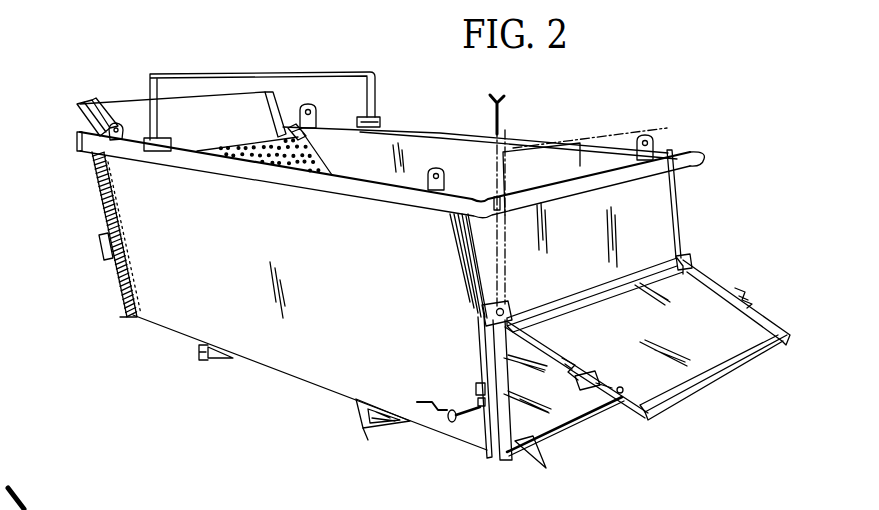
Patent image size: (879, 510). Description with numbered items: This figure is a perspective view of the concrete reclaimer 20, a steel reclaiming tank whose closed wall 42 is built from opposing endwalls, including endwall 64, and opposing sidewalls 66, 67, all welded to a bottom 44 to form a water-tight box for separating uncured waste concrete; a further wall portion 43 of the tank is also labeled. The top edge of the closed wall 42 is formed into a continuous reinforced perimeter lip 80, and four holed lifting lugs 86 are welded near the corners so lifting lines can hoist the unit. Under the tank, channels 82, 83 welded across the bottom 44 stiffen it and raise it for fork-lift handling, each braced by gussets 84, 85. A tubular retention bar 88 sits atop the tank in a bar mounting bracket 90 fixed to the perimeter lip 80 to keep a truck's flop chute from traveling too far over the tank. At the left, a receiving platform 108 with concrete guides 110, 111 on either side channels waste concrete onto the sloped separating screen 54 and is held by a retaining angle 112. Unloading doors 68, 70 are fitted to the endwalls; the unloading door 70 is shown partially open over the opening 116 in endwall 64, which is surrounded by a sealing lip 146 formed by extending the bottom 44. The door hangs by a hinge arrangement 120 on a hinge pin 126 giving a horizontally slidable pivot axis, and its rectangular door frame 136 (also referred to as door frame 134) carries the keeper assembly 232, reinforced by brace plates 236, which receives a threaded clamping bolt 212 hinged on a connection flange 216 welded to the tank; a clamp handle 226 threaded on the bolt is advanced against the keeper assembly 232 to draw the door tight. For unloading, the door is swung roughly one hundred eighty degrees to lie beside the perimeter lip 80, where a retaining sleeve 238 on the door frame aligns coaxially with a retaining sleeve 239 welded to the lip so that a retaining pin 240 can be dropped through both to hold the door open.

The concrete reclaimer 20 is at (409, 61).
The closed wall 42 is at (157, 317).
The rear wall top edge 43 is at (448, 142).
The bottom 44 is at (595, 400).
The separating screen 54 is at (332, 173).
The endwall 64 is at (671, 219).
The sidewall 66 is at (290, 370).
The sidewall 67 is at (514, 147).
The unloading door 68 is at (101, 271).
The unloading door 70 is at (774, 302).
The perimeter lip 80 is at (347, 199).
The channel 82 is at (202, 361).
The channel 83 is at (371, 425).
The gusset 84 is at (218, 361).
The gusset 85 is at (356, 408).
The lifting lug 86 is at (315, 110).
The retention bar 88 is at (343, 73).
The bar mounting bracket 90 is at (385, 117).
The receiving platform 108 is at (124, 100).
The concrete guide 110 is at (106, 106).
The concrete guide 111 is at (266, 116).
The retaining angle 112 is at (306, 136).
The opening 116 is at (560, 448).
The hinge 120 is at (700, 249).
The hinge pin 126 is at (580, 296).
The door frame 134 is at (707, 362).
The door frame 136 is at (748, 340).
The sealing lip 146 is at (547, 455).
The clamping bolt 212 is at (462, 405).
The connection flange 216 is at (480, 340).
The clamp handle 226 is at (426, 400).
The keeper assembly 232 is at (744, 290).
The brace plate 236 is at (612, 400).
The retaining sleeve 238 is at (620, 380).
The retaining sleeve 239 is at (495, 211).
The retaining pin 240 is at (503, 99).